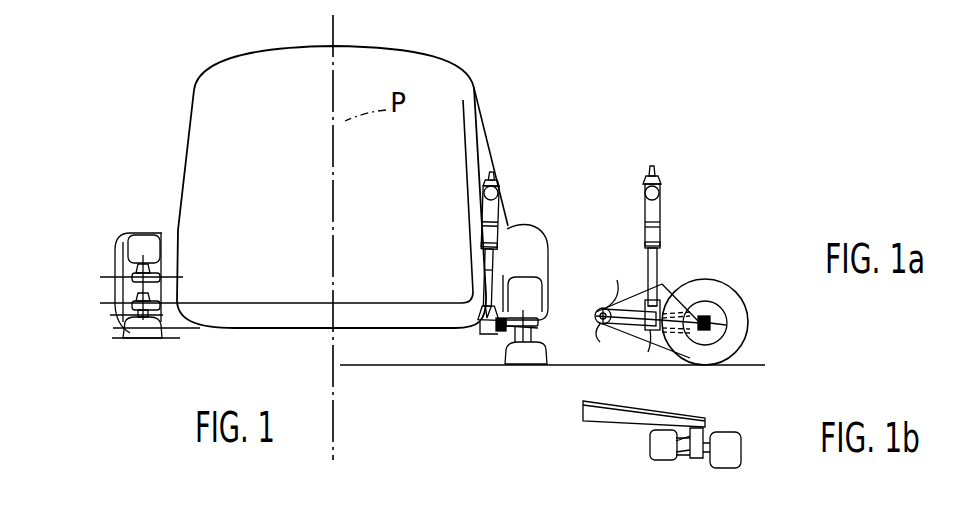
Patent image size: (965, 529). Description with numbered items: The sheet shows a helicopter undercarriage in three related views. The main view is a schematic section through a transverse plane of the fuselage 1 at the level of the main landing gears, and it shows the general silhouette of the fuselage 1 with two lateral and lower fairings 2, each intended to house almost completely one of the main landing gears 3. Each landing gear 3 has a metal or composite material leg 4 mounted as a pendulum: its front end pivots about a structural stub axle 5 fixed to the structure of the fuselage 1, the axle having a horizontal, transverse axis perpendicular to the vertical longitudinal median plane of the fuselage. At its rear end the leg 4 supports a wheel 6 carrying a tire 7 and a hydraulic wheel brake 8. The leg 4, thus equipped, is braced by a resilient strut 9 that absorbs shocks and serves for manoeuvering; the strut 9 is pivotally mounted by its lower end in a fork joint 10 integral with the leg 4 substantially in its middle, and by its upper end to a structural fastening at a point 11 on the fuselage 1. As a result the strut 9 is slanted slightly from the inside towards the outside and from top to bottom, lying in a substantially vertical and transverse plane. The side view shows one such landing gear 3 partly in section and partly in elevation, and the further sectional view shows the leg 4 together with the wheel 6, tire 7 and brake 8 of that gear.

In FIG. 1, the fuselage 1 is at (484, 76).
In FIG. 1, the lateral and lower fairings 2 is at (163, 232).
In FIG. 1, the main landing gear 3 is at (510, 267).
In FIG. 1A, the main landing gear 3 is at (666, 270).
In FIG. 1, the leg 4 is at (484, 322).
In FIG. 1A, the leg 4 is at (616, 296).
In FIG. 1B, the leg 4 is at (612, 423).
In FIG. 1A, the structural stub axle 5 is at (600, 336).
In FIG. 1, the wheel 6 is at (123, 304).
In FIG. 1A, the wheel 6 is at (718, 312).
In FIG. 1B, the wheel 6 is at (676, 462).
In FIG. 1, the tire 7 is at (134, 339).
In FIG. 1A, the tire 7 is at (746, 332).
In FIG. 1B, the tire 7 is at (732, 467).
In FIG. 1B, the hydraulic wheel brake 8 is at (700, 442).
In FIG. 1, the resilient strut 9 is at (505, 229).
In FIG. 1A, the resilient strut 9 is at (664, 232).
In FIG. 1A, the fork joint 10 is at (648, 352).
In FIG. 1, the structural fastening point 11 is at (495, 178).